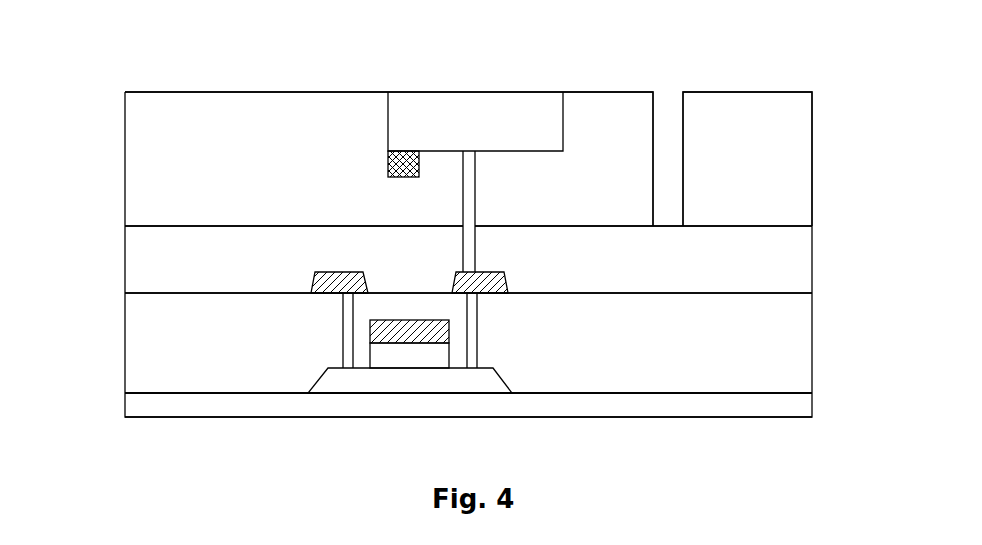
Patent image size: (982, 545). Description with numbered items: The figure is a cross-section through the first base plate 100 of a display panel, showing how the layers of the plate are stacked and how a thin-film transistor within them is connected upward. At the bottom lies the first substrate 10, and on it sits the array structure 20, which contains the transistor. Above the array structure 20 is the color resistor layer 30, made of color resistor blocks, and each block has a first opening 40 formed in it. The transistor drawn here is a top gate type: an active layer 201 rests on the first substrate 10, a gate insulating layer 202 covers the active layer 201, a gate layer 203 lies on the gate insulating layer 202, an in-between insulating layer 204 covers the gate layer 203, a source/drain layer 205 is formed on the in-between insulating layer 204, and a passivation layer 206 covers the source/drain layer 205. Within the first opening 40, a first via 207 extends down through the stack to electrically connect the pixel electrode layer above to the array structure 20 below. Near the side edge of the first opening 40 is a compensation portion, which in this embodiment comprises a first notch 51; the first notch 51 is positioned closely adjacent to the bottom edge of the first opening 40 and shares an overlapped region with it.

The first base plate 100 is at (140, 57).
The first substrate 10 is at (812, 402).
The array structure 20 is at (830, 230).
The color resistor layer 30 is at (830, 92).
The first opening 40 is at (418, 108).
The first notch 51 is at (388, 163).
The active layer 201 is at (308, 388).
The gate insulating layer 202 is at (433, 358).
The gate layer 203 is at (397, 332).
The in-between insulating layer 204 is at (125, 332).
The source/drain layer 205 is at (311, 288).
The passivation layer 206 is at (125, 245).
The first via 207 is at (477, 180).